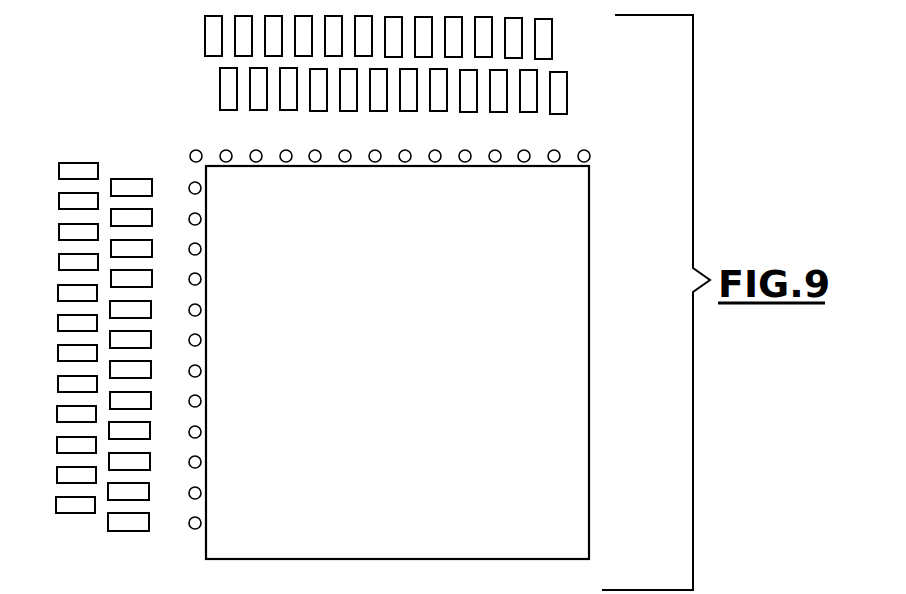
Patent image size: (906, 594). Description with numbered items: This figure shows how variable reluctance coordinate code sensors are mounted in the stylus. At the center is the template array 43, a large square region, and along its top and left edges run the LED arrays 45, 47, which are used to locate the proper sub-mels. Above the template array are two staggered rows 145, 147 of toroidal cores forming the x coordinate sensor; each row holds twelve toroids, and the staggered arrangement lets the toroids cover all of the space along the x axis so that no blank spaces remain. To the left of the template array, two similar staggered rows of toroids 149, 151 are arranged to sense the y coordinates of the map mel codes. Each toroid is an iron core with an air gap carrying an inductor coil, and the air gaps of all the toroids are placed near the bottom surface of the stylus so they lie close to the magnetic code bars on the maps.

The template array 43 is at (378, 361).
The LED array 45 is at (598, 157).
The LED array 47 is at (193, 538).
The first row of toroidal cores 145 is at (192, 27).
The second row of toroidal cores 147 is at (192, 87).
The first row of toroids for y coordinate 149 is at (63, 523).
The second row of toroids for y coordinate 151 is at (134, 540).